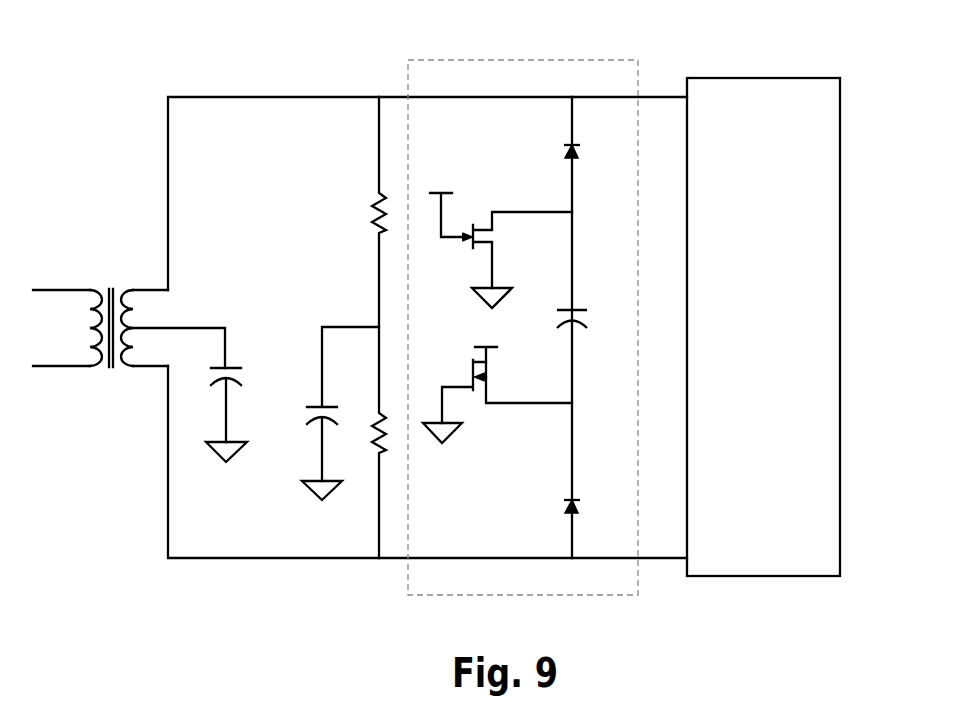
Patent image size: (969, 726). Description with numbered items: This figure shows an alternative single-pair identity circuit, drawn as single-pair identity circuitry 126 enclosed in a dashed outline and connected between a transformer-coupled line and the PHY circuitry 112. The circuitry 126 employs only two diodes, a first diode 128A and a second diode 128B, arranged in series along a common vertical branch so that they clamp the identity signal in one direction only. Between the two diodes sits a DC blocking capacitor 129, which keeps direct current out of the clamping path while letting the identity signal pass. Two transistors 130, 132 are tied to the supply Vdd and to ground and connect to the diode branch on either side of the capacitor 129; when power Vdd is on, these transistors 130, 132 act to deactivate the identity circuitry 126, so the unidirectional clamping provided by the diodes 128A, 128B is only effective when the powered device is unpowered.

The single-pair identity circuitry 126 is at (408, 68).
The diode 128A is at (575, 160).
The diode 128B is at (576, 513).
The DC blocking capacitor 129 is at (578, 326).
The transistor 130 is at (472, 247).
The transistor 132 is at (470, 360).
The PHY circuitry 112 is at (763, 327).